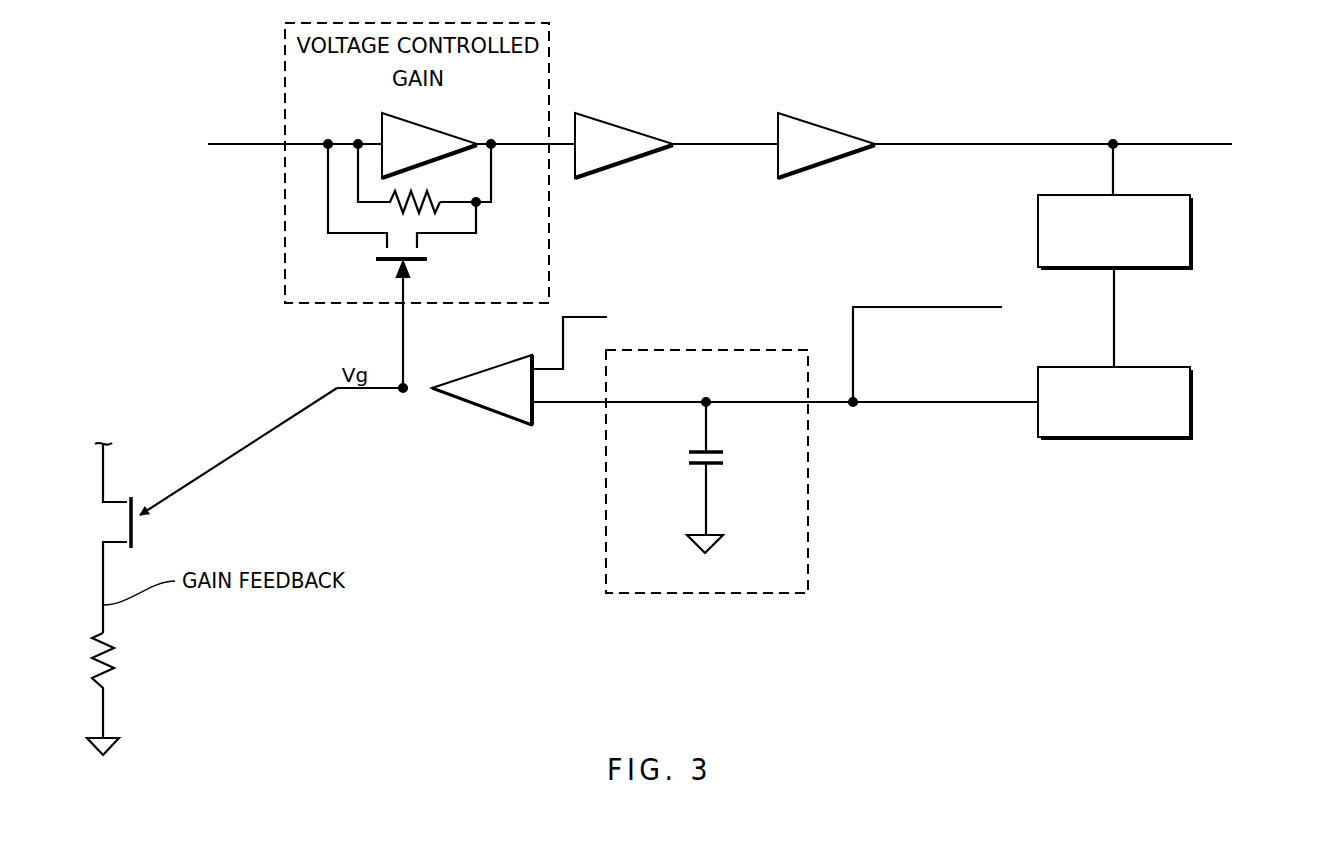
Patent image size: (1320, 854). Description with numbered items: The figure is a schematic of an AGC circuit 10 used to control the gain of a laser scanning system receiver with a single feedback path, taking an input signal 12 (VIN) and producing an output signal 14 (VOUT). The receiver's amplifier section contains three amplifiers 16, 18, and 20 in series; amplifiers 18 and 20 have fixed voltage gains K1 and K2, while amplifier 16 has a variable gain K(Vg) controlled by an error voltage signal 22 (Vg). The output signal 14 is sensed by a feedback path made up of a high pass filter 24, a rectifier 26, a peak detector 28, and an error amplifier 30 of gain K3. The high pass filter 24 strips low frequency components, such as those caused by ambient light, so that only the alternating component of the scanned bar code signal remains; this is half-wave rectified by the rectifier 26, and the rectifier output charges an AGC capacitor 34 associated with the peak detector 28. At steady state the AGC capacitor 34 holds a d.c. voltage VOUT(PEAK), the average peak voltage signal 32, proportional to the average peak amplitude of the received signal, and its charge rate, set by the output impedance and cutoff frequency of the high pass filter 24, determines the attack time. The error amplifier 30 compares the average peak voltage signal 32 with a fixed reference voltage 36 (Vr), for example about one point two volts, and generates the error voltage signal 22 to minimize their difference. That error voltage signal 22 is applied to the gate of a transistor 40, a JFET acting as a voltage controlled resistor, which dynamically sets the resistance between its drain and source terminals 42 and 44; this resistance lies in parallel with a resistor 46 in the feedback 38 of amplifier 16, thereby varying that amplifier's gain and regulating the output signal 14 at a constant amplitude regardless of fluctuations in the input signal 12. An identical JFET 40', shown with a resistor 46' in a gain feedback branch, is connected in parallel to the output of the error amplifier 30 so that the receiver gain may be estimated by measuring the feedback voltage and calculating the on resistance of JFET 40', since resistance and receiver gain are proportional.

The AGC circuit 10 is at (410, 430).
The input signal 12 is at (265, 147).
The output signal 14 is at (1135, 145).
The amplifier 16 is at (430, 126).
The amplifier 18 is at (600, 120).
The amplifier 20 is at (800, 121).
The error voltage signal 22 is at (400, 335).
The high pass filter 24 is at (1190, 229).
The rectifier 26 is at (1190, 415).
The peak detector 28 is at (770, 348).
The error amplifier 30 is at (490, 415).
The average peak voltage signal 32 is at (853, 375).
The AGC capacitor 34 is at (713, 467).
The reference voltage 36 is at (590, 319).
The feedback 38 is at (491, 170).
The transistor 40 is at (440, 281).
The drain terminal 42 is at (420, 246).
The source terminal 44 is at (377, 245).
The resistor 46 is at (448, 199).
The JFET 40' is at (129, 522).
The resistor 46' is at (120, 694).